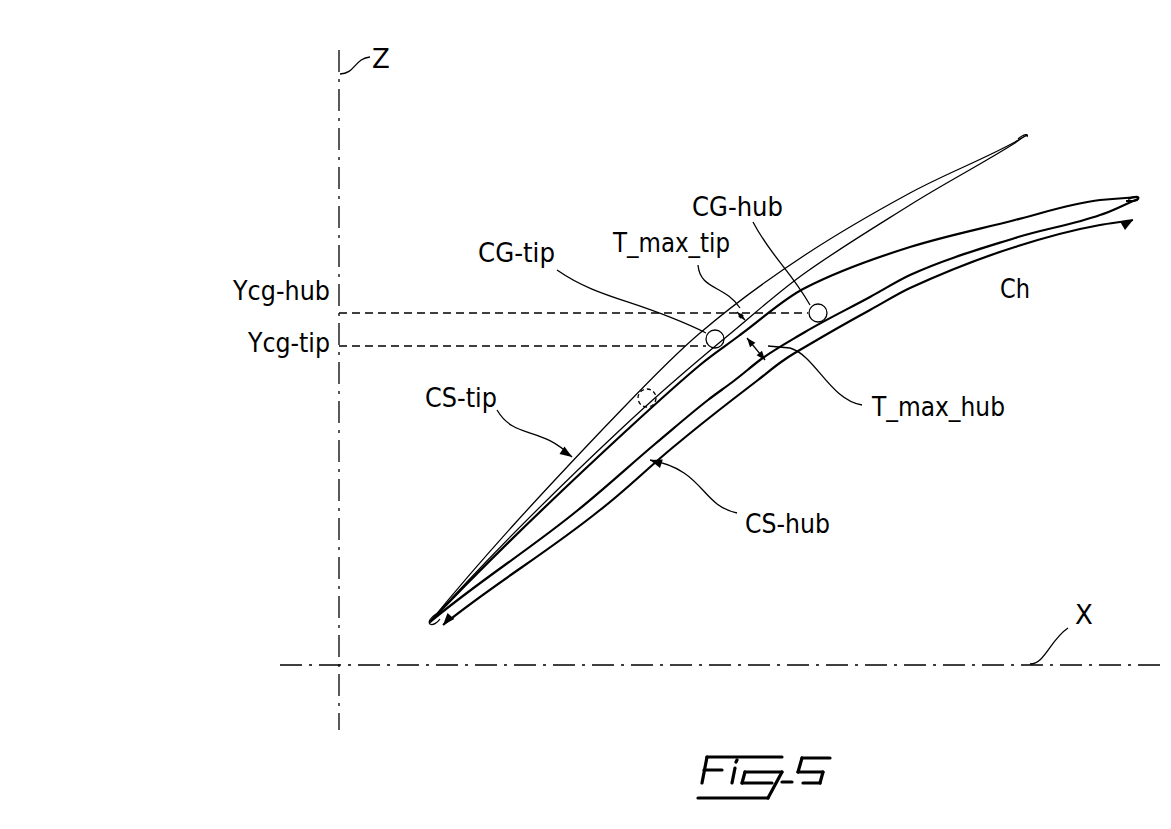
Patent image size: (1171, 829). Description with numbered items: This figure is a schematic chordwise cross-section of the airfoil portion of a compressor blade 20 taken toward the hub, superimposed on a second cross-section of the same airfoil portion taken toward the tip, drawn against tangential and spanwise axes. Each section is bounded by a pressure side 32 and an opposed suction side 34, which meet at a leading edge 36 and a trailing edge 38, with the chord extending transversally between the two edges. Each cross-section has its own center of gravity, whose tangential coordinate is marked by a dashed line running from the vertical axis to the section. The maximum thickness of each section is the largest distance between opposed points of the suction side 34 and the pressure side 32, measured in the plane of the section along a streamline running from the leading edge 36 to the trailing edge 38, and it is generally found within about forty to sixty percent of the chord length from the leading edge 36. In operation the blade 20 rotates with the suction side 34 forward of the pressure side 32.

The blade 20 is at (497, 182).
The pressure side 32 is at (930, 190).
The suction side 34 is at (840, 233).
The leading edge 36 is at (428, 618).
The trailing edge 38 is at (1027, 137).